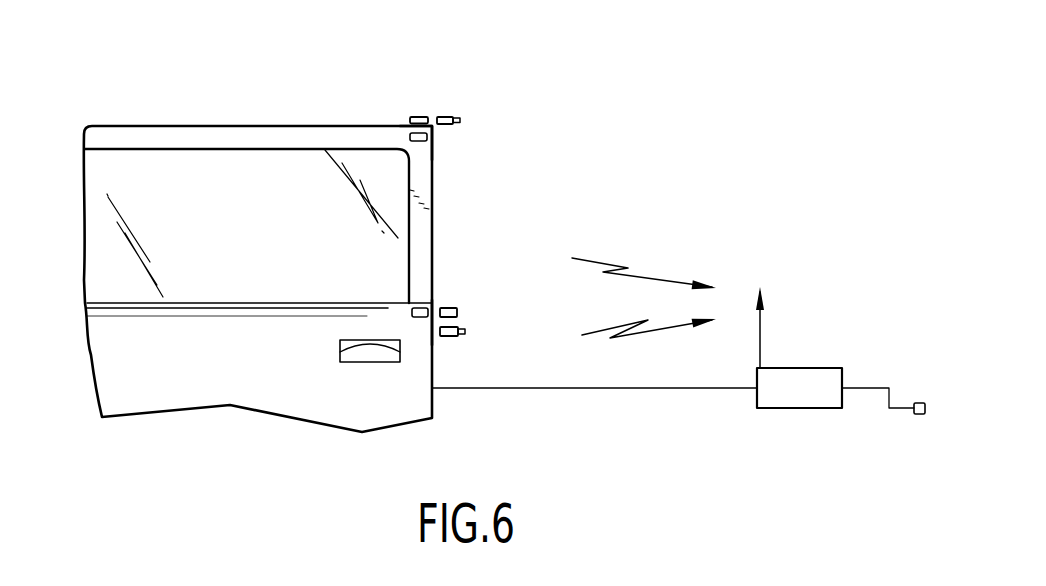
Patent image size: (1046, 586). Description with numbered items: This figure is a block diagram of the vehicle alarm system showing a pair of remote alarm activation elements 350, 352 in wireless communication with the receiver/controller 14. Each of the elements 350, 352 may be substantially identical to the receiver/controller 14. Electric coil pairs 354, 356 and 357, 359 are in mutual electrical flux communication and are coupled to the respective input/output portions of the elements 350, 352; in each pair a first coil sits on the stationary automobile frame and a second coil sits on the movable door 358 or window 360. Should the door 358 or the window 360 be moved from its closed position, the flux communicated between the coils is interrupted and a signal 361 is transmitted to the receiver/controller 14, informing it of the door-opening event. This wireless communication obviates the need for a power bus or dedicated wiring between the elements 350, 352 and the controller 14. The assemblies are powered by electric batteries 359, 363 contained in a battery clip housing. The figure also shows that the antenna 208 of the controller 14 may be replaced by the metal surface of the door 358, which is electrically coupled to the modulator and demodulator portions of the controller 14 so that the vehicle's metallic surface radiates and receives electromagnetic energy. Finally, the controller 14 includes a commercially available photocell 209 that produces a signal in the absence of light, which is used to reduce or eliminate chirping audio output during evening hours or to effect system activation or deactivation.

The receiver/controller 14 is at (785, 400).
The antenna 208 is at (760, 332).
The photocell 209 is at (918, 415).
The remote alarm activation element 350 is at (440, 97).
The remote alarm activation element 352 is at (478, 307).
The electric coil 354 is at (446, 124).
The electric coil 356 is at (416, 116).
The electric coil 357 is at (466, 290).
The door 358 is at (253, 367).
The electric coil / battery 359 is at (465, 334).
The window 360 is at (255, 217).
The signal 361 is at (652, 278).
The electric battery 363 is at (460, 120).